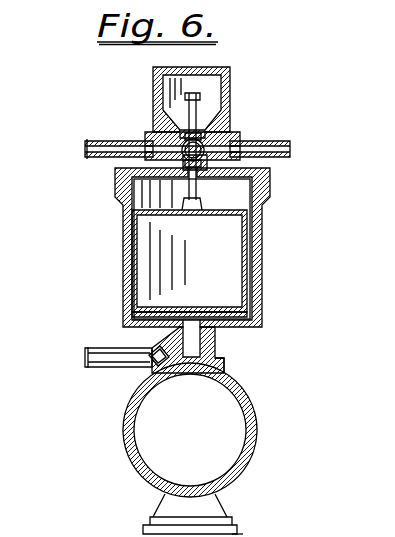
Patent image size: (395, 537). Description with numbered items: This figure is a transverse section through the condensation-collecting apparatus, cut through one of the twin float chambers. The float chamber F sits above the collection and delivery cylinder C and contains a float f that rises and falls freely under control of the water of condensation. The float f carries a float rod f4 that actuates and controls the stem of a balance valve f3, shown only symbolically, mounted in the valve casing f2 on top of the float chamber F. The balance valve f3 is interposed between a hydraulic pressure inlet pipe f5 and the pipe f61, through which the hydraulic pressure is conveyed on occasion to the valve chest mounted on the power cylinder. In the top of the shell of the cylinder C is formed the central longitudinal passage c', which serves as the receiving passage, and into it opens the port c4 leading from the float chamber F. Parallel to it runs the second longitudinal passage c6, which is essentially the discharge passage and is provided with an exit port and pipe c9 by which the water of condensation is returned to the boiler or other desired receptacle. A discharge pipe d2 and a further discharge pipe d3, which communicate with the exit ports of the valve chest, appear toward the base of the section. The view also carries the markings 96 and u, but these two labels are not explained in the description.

The valve casing f2 is at (202, 102).
The balance valve f3 is at (176, 147).
The float rod f4 is at (197, 191).
The hydraulic pressure inlet pipe f5 is at (292, 149).
The left pipe 96 is at (87, 150).
The float chamber F is at (199, 247).
The float f is at (189, 261).
The port c4 is at (197, 320).
The discharge passage c6 is at (150, 348).
The valve u is at (143, 342).
The exit port and pipe c9 is at (86, 366).
The central longitudinal passage c' is at (252, 363).
The collection and delivery cylinder C is at (190, 430).
The discharge pipe d2 is at (145, 532).
The discharge pipe d3 is at (243, 534).
The pipe f61 is at (283, 536).